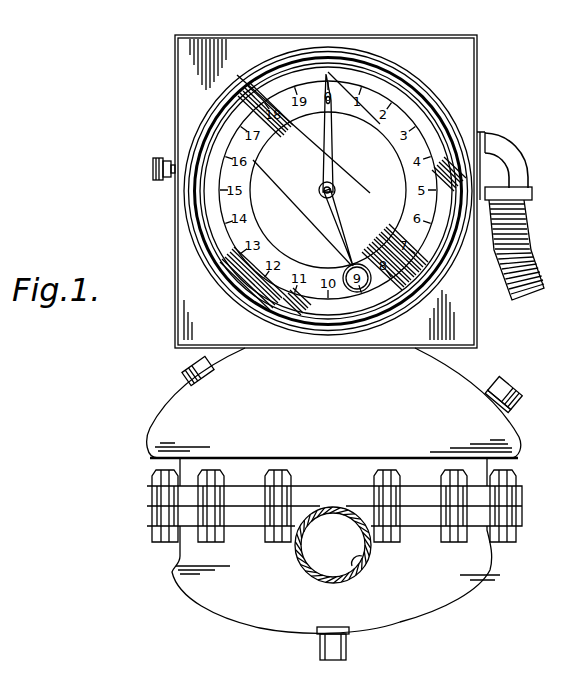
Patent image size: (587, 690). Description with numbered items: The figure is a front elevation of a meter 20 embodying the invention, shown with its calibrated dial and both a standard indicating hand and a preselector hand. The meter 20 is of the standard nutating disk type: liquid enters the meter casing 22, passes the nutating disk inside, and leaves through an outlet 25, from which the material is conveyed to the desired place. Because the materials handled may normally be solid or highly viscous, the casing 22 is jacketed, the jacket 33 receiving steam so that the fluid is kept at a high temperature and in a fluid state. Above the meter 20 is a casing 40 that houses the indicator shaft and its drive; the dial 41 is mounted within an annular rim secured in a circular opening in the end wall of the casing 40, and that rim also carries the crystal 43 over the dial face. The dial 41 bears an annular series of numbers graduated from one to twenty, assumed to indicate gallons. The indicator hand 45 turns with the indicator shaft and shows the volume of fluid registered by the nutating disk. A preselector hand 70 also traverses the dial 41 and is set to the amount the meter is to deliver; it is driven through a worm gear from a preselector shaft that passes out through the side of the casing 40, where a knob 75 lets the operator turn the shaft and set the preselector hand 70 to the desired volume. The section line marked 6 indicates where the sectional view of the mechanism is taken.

The section line 6- 6 is at (303, 20).
The meter 20 is at (155, 402).
The meter casing 22 is at (316, 470).
The outlet 25 is at (364, 566).
The jacket 33 is at (140, 432).
The casing 40 is at (487, 92).
The dial 41 is at (400, 117).
The crystal 43 is at (245, 280).
The indicator hand 45 is at (331, 141).
The preselector hand 70 is at (340, 231).
The knob 75 is at (152, 168).